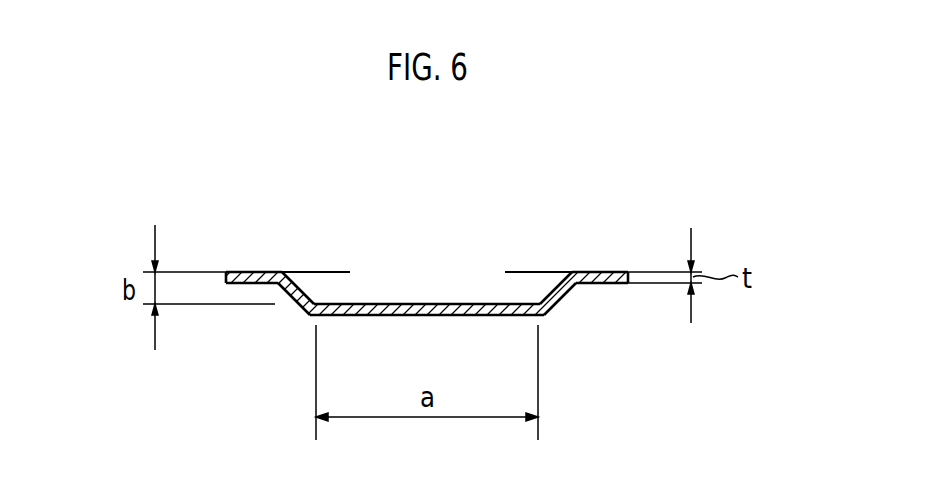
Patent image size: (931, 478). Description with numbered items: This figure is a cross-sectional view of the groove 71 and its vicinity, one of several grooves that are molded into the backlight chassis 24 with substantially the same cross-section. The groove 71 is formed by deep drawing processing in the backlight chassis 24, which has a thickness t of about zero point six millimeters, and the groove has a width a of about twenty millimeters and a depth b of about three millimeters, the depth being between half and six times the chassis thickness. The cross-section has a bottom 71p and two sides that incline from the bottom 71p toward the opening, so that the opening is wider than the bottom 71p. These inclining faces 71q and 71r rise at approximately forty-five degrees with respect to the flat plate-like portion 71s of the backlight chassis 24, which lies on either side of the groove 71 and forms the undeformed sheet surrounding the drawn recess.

The groove 71 is at (405, 266).
The flat plate-like portion 71s is at (263, 272).
The inclining face 71q is at (307, 292).
The bottom 71p is at (433, 304).
The inclining face 71r is at (547, 292).
The backlight chassis 24 is at (600, 272).